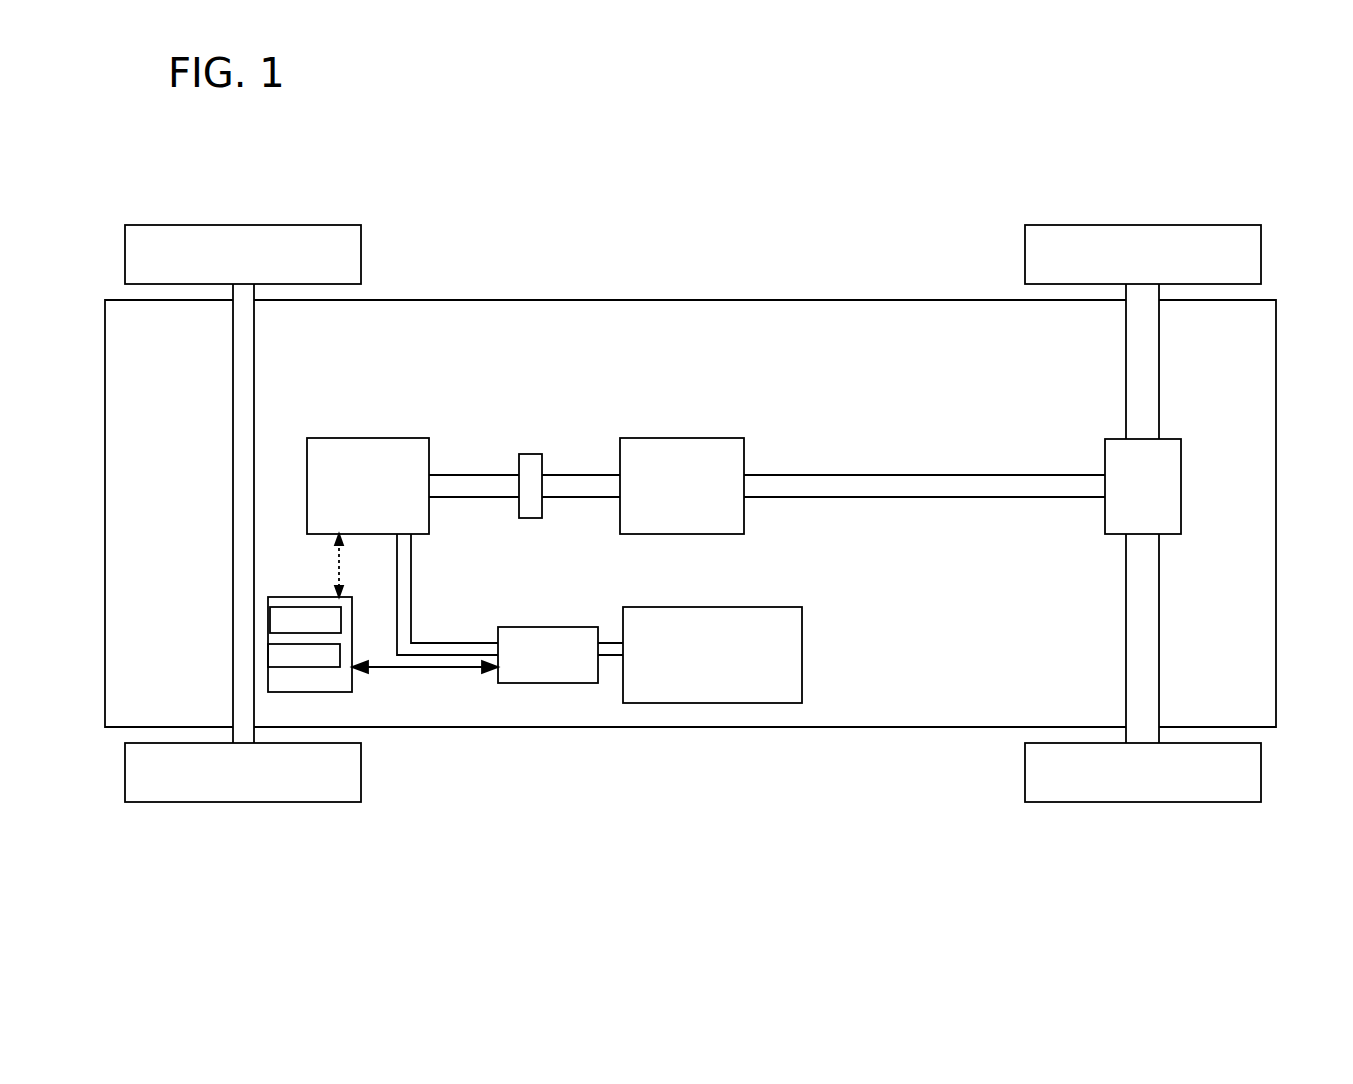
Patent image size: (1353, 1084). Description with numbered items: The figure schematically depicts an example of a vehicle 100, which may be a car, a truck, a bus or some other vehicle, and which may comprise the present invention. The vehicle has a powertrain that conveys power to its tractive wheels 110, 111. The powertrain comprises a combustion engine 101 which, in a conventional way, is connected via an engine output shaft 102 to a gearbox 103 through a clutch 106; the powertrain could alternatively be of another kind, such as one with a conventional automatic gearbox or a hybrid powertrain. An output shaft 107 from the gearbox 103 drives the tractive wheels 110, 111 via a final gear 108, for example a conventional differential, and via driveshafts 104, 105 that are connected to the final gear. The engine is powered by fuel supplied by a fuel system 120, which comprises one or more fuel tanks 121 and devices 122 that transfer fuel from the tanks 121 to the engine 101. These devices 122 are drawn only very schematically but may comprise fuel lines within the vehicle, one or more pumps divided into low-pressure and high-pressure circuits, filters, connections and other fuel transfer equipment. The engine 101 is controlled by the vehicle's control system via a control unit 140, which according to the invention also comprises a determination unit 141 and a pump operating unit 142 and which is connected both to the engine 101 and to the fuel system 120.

The vehicle 100 is at (603, 121).
The combustion engine 101 is at (340, 462).
The engine output shaft 102 is at (455, 482).
The gearbox 103 is at (683, 448).
The driveshaft 104 is at (1147, 357).
The driveshaft 105 is at (1153, 645).
The clutch 106 is at (525, 510).
The output shaft 107 is at (1021, 492).
The final gear 108 is at (1173, 479).
The tractive wheel 110 is at (1256, 773).
The tractive wheel 111 is at (1256, 246).
The fuel system 120 is at (650, 683).
The fuel tank 121 is at (743, 637).
The fuel transfer devices 122 is at (577, 650).
The control unit 140 is at (304, 604).
The determination unit 141 is at (305, 621).
The pump operating unit 142 is at (304, 657).